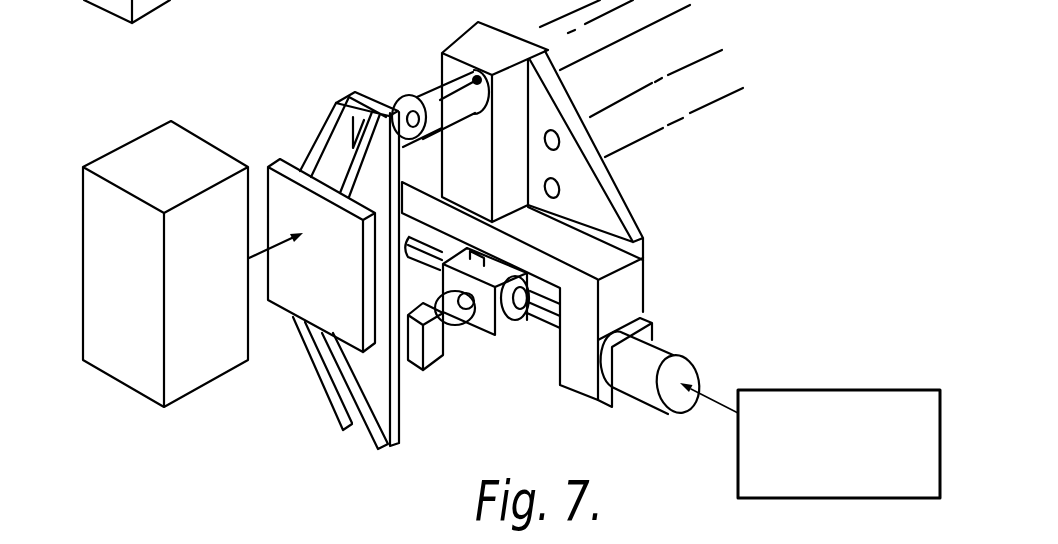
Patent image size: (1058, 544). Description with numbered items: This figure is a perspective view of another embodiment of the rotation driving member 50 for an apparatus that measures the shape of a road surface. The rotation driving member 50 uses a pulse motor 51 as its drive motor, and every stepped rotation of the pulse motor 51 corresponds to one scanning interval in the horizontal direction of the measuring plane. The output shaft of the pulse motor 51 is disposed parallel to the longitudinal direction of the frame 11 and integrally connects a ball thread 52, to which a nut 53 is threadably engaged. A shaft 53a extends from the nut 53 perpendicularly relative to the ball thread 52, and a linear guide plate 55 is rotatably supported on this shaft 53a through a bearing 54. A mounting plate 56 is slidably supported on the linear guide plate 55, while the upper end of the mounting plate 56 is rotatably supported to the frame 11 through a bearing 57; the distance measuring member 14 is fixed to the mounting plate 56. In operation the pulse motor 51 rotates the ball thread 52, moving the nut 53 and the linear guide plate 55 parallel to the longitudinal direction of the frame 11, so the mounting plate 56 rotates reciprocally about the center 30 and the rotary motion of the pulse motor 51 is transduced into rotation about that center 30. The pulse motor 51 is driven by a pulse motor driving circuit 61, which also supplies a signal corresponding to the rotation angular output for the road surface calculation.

The frame 11 is at (623, 199).
The distance measuring member 14 is at (143, 7).
The center 30 is at (462, 44).
The rotation driving member 50 is at (695, 284).
The pulse motor 51 is at (672, 349).
The ball thread 52 is at (518, 325).
The nut 53 is at (543, 327).
The shaft 53a is at (466, 312).
The bearing 54 is at (450, 332).
The linear guide plate 55 is at (432, 365).
The mounting plate 56 is at (293, 315).
The bearing 57 is at (413, 83).
The pulse motor driving circuit 61 is at (863, 390).